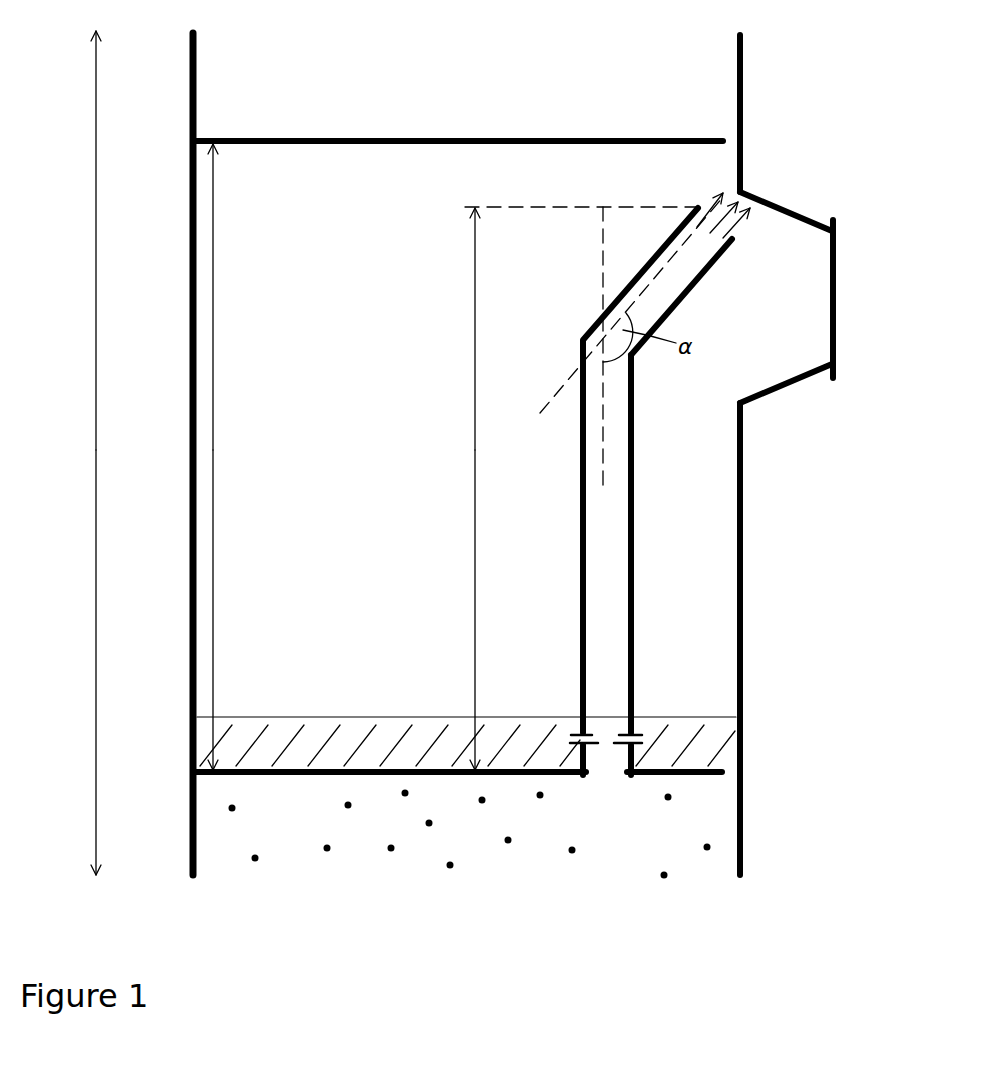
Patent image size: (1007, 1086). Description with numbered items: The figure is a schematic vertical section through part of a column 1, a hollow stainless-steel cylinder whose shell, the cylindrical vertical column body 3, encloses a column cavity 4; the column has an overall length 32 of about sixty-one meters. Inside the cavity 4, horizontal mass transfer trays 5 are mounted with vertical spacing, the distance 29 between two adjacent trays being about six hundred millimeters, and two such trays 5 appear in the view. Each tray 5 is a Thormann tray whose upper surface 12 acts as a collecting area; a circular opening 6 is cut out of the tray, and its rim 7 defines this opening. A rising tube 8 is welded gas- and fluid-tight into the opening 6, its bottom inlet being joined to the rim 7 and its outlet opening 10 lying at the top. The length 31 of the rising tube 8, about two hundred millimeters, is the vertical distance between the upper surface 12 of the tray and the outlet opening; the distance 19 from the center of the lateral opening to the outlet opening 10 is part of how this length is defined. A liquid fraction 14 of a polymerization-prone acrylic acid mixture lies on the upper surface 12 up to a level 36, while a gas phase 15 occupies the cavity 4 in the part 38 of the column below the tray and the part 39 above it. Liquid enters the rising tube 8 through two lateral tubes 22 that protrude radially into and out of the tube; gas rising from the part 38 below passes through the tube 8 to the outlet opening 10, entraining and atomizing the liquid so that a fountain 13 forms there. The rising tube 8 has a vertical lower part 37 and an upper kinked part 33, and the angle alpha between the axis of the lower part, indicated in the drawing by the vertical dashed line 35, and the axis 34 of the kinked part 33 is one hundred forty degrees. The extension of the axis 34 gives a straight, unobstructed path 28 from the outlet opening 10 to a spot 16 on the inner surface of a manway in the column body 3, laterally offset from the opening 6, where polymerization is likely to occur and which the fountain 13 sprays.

The column 1 is at (768, 100).
The column body 3 is at (191, 408).
The column cavity 4 is at (382, 74).
The mass transfer tray 5 is at (296, 145).
The opening 6 is at (612, 778).
The rim 7 is at (583, 776).
The rising tube 8 is at (640, 518).
The outlet opening 10 is at (735, 246).
The upper surface 12 is at (330, 770).
The fountain 13 is at (709, 210).
The liquid fraction 14 is at (397, 730).
The gas phase 15 is at (390, 848).
The spot 16 is at (773, 199).
The distance 19 is at (637, 845).
The lateral tube 22 is at (598, 742).
The straight path 28 is at (758, 228).
The distance 29 is at (215, 445).
The length 31 is at (473, 405).
The length 32 is at (96, 497).
The kinked part 33 is at (641, 270).
The axis 34 is at (543, 420).
The vertical axis 35 is at (603, 446).
The level 36 is at (247, 715).
The lower part 37 is at (633, 406).
The part of the column below the mass transfer tray 38 is at (715, 819).
The part of the column above the mass transfer tray 39 is at (716, 619).